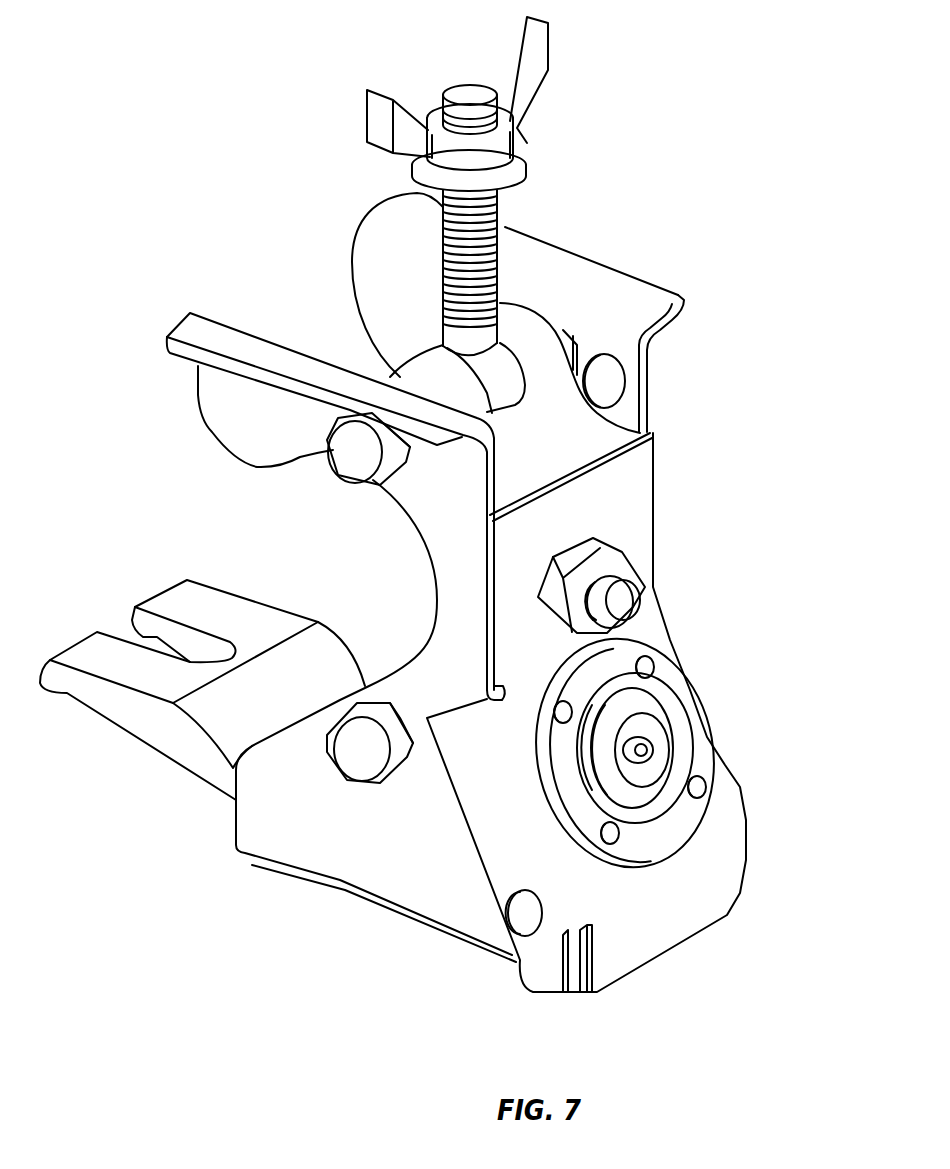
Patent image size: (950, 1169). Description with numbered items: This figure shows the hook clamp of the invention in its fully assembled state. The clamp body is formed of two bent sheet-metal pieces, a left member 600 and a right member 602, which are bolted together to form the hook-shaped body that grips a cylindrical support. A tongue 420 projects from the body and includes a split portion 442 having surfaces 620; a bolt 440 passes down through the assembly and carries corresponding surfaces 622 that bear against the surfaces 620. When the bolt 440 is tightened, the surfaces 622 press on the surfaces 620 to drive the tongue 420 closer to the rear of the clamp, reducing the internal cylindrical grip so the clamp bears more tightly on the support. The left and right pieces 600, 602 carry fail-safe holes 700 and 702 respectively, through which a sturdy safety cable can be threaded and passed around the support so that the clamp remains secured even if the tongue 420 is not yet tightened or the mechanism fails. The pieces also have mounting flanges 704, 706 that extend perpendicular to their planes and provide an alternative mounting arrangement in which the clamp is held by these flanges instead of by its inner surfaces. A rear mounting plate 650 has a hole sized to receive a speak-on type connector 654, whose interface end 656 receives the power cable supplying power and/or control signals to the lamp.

The surfaces of the bolt 622 is at (517, 136).
The bolt 440 is at (497, 227).
The mounting flange 704 is at (585, 275).
The left member 600 is at (648, 358).
The fail-safe hole 700 is at (603, 375).
The mounting flange 706 is at (190, 333).
The right member 602 is at (208, 410).
The fail-safe hole 702 is at (448, 472).
The surfaces of the split portion 620 is at (200, 595).
The split portion 442 is at (143, 620).
The tongue 420 is at (323, 660).
The interface end 656 is at (647, 722).
The speak-on type connector 654 is at (682, 833).
The rear mounting plate 650 is at (648, 943).